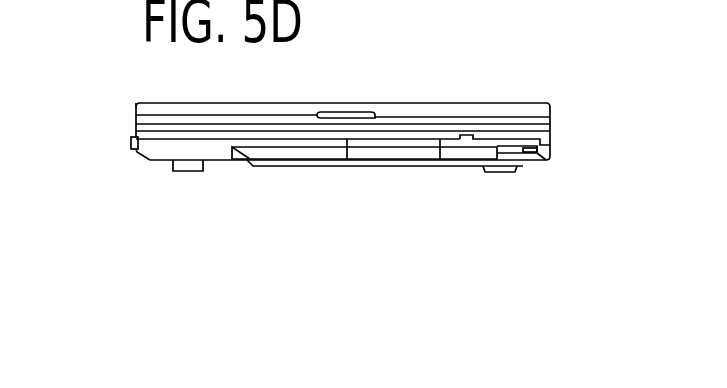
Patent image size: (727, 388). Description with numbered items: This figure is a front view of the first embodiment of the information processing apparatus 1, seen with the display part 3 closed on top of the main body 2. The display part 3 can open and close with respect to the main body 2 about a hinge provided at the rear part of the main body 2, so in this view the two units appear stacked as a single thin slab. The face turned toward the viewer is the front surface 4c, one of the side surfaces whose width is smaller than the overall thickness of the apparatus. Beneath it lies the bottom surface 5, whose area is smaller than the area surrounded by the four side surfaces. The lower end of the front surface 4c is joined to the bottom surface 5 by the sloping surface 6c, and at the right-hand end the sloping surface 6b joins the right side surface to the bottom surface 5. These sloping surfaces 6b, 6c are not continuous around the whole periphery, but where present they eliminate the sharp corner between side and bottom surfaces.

The information processing apparatus 1 is at (498, 45).
The main body 2 is at (552, 128).
The display part 3 is at (551, 108).
The front surface 4c is at (136, 124).
The bottom surface 5 is at (392, 167).
The sloping surface 6b is at (526, 163).
The sloping surface 6c is at (152, 162).